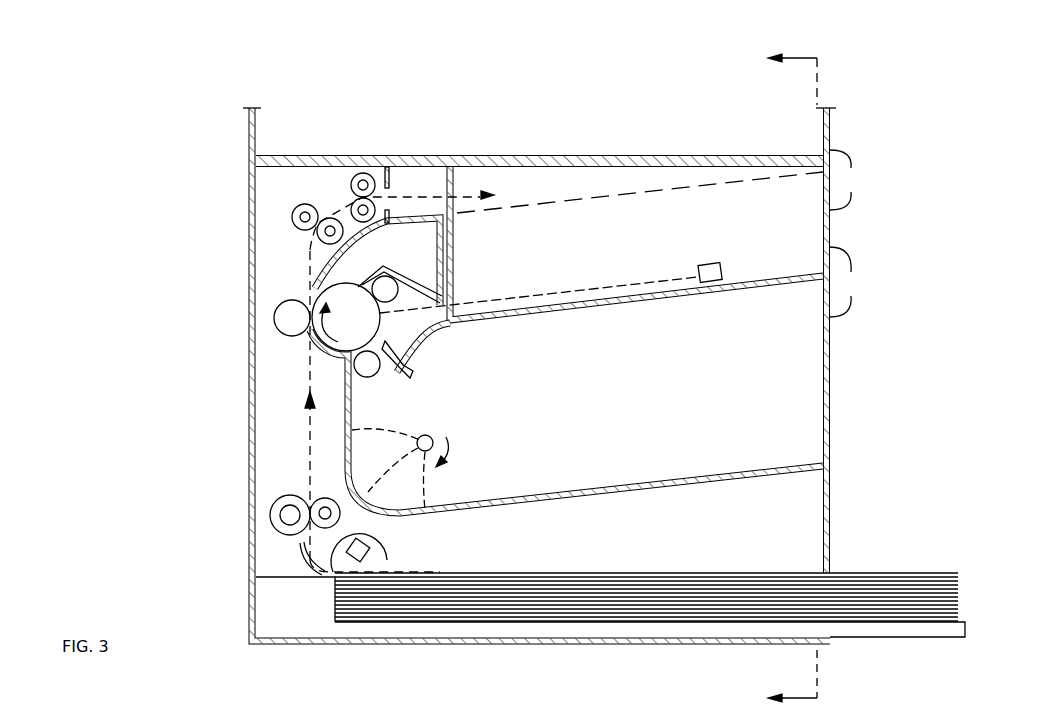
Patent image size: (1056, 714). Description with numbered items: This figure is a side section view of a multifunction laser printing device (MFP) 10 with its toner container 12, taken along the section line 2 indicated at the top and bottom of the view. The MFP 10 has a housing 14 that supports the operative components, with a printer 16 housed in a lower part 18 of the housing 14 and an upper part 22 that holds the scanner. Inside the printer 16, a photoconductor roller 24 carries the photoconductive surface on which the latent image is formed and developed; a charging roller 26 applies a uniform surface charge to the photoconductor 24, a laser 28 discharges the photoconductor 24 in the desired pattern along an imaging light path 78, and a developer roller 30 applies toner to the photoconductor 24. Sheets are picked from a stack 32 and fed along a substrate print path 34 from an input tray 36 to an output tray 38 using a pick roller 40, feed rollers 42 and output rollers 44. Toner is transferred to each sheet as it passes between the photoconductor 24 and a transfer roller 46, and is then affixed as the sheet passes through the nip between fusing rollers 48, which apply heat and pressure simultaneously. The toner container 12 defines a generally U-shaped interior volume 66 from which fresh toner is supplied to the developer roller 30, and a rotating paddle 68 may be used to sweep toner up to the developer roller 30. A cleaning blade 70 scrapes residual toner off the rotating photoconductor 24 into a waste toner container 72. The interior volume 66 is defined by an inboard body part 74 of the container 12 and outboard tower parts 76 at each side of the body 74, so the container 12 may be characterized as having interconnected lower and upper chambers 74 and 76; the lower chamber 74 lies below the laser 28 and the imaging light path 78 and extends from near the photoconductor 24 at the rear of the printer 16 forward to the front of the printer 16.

The section line 2- 2 is at (801, 380).
The multifunction laser printing device (MFP) 10 is at (896, 91).
The toner container 12 is at (845, 282).
The housing 14 is at (845, 180).
The printer 16 is at (236, 273).
The lower part 18 is at (831, 232).
The upper part 22 is at (831, 130).
The photoconductor roller 24 is at (378, 320).
The charging roller 26 is at (388, 284).
The laser 28 is at (708, 263).
The developer roller 30 is at (380, 371).
The stack 32 is at (895, 573).
The substrate print path 34 is at (484, 194).
The input tray 36 is at (966, 630).
The output tray 38 is at (612, 190).
The pick roller 40 is at (380, 537).
The feed rollers 42 is at (318, 499).
The output rollers 44 is at (352, 208).
The transfer roller 46 is at (289, 332).
The fusing rollers 48 is at (298, 222).
The U-shaped interior volume 66 is at (629, 251).
The rotating paddle 68 is at (432, 440).
The cleaning blade 70 is at (358, 284).
The waste toner container 72 is at (428, 267).
The body part 74 is at (823, 433).
The tower parts 76 is at (455, 280).
The imaging light path 78 is at (562, 292).